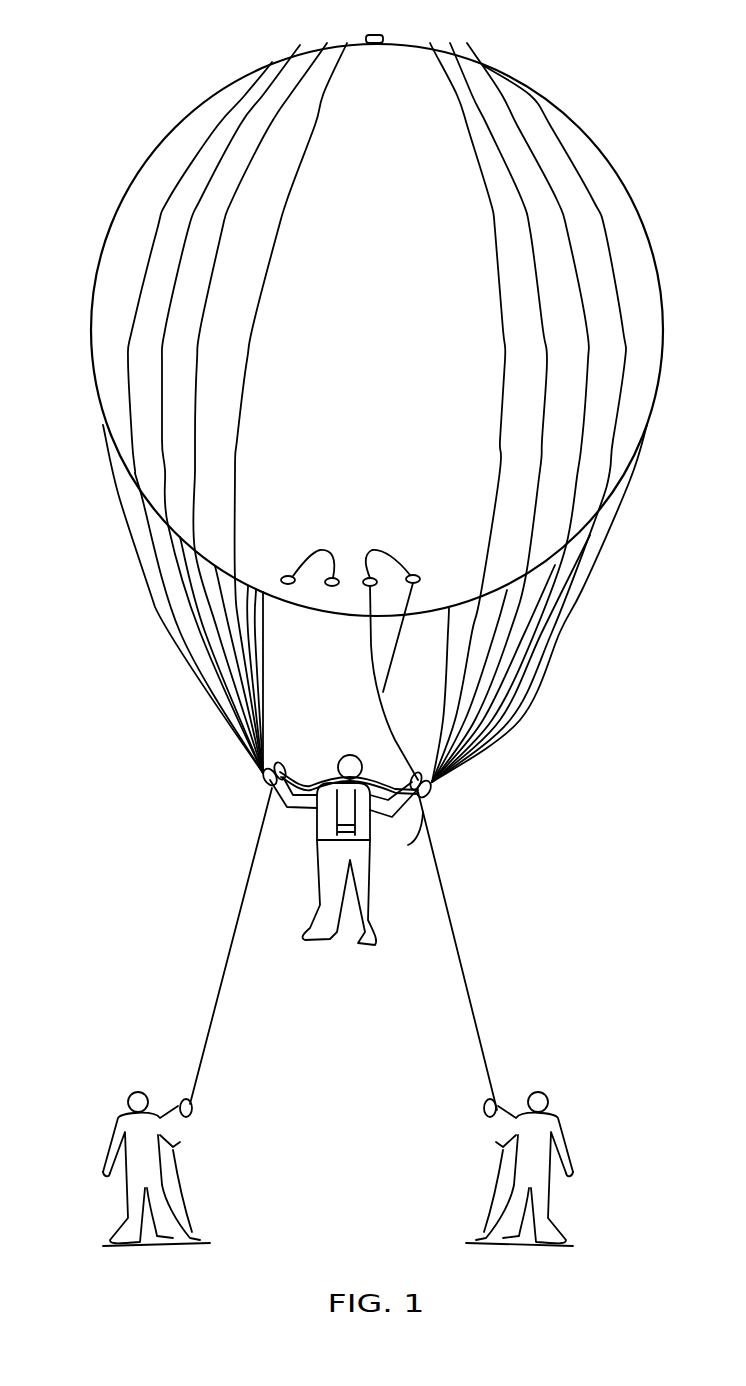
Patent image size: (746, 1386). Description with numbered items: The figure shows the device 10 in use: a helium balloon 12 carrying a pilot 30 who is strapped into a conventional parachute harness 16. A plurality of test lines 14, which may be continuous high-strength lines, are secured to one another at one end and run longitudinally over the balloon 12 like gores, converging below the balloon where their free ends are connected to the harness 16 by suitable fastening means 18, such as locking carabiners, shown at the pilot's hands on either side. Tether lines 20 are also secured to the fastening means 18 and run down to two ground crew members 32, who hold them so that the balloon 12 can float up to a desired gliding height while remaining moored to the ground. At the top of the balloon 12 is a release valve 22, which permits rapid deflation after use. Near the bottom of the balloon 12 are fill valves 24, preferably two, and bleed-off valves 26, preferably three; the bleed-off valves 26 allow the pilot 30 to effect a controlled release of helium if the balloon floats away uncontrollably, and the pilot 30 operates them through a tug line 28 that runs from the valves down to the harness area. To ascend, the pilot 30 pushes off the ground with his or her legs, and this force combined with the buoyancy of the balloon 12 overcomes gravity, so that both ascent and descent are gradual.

The device 10 is at (696, 334).
The balloon 12 is at (606, 198).
The test lines 14 is at (166, 618).
The parachute harness 16 is at (330, 817).
The fastening means 18 is at (266, 788).
The tether lines 20 is at (226, 948).
The release valve 22 is at (376, 35).
The fill valves 24 is at (318, 551).
The bleed-off valves 26 is at (383, 552).
The tug line 28 is at (384, 718).
The pilot 30 is at (320, 860).
The ground crew members 32 is at (118, 1133).